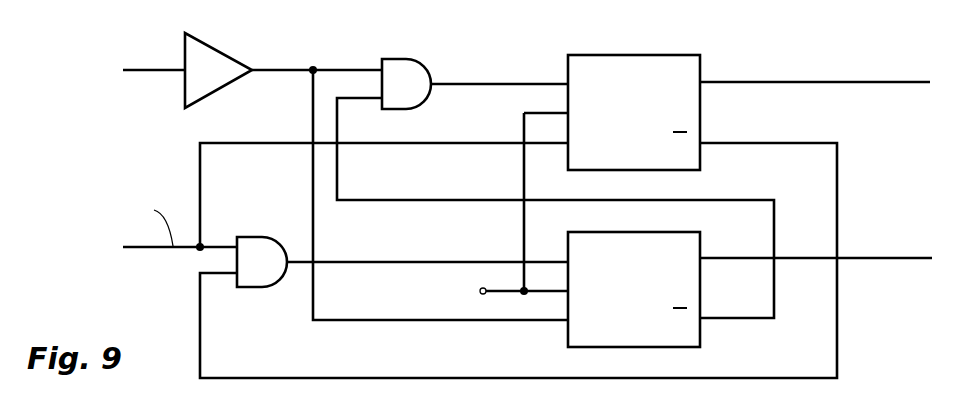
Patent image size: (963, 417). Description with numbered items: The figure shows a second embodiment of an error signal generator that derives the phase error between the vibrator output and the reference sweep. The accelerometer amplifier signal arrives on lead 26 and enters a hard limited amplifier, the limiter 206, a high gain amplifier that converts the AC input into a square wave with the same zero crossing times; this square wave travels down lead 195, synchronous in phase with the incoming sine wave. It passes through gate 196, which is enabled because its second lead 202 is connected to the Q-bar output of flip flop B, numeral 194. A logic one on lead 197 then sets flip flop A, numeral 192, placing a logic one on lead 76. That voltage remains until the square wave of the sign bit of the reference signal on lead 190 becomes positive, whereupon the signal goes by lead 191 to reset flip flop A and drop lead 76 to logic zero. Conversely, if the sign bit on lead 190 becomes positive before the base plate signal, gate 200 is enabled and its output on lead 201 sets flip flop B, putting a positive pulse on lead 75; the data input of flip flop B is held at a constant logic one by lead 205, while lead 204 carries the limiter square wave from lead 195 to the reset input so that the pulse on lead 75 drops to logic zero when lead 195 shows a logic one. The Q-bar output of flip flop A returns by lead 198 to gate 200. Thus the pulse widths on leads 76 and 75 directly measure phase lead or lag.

The input lead 26 is at (145, 72).
The limiter 206 is at (222, 53).
The lead 195 is at (282, 69).
The reset line to flip-flop B 204 is at (310, 107).
The second lead 202 is at (338, 127).
The gate 196 is at (412, 60).
The lead 197 is at (494, 82).
The flip flop A 192 is at (617, 55).
The lead 76 is at (837, 81).
The Q-bar output line of flip-flop A 198 is at (730, 142).
The lead 191 is at (257, 145).
The gate 200 is at (238, 236).
The lead 190 is at (148, 250).
The AND gate output line to flip-flop B 201 is at (400, 265).
The logic 1 data input line 205 is at (497, 293).
The lead 75 is at (895, 257).
The flip flop B 194 is at (693, 349).